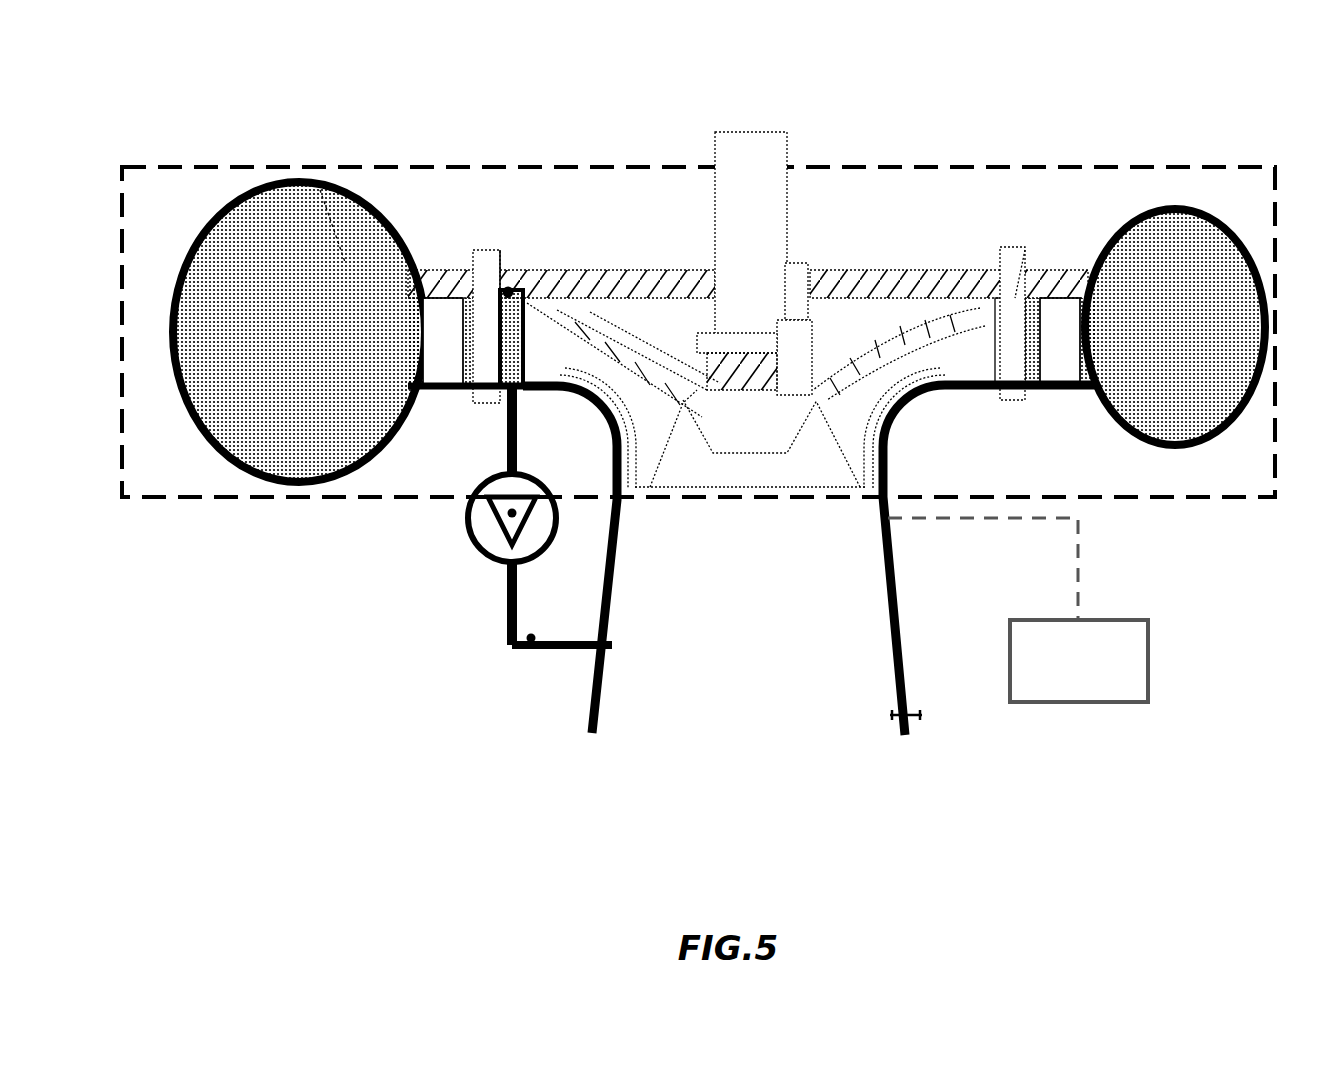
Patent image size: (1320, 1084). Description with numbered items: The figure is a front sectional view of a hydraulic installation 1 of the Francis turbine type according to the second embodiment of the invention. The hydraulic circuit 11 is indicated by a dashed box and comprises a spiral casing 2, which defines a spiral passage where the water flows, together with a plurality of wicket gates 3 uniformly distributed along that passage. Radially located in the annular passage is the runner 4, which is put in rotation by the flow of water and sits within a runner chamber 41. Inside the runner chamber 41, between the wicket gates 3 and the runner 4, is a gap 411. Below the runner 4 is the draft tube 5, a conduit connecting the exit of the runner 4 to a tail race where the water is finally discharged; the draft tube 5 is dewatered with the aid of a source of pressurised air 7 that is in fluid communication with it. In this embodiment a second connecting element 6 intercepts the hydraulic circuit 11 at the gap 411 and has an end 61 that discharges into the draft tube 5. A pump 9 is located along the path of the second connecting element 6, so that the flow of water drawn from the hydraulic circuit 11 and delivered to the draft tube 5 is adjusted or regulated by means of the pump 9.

The hydraulic installation 1 is at (192, 93).
The spiral casing 2 is at (353, 255).
The wicket gates 3 is at (1054, 338).
The runner 4 is at (729, 484).
The runner chamber 41 is at (634, 332).
The gap 411 is at (508, 292).
The draft tube 5 is at (718, 619).
The second connecting element 6 is at (518, 648).
The end of the second connecting element 61 is at (605, 655).
The source of pressurised air 7 is at (1074, 669).
The pump 9 is at (512, 513).
The hydraulic circuit 11 is at (982, 214).